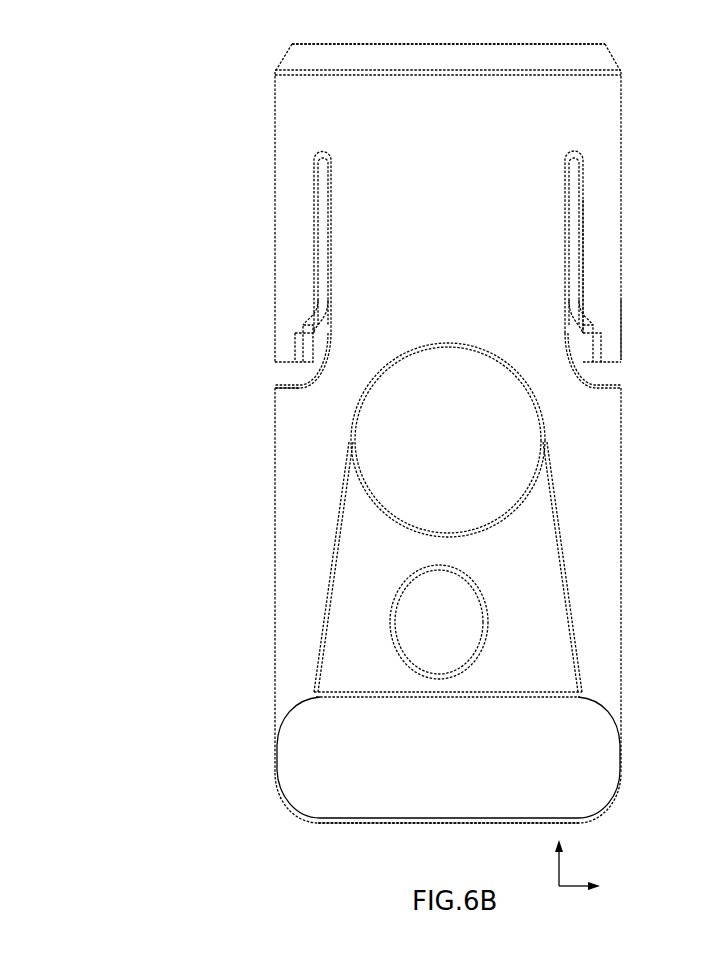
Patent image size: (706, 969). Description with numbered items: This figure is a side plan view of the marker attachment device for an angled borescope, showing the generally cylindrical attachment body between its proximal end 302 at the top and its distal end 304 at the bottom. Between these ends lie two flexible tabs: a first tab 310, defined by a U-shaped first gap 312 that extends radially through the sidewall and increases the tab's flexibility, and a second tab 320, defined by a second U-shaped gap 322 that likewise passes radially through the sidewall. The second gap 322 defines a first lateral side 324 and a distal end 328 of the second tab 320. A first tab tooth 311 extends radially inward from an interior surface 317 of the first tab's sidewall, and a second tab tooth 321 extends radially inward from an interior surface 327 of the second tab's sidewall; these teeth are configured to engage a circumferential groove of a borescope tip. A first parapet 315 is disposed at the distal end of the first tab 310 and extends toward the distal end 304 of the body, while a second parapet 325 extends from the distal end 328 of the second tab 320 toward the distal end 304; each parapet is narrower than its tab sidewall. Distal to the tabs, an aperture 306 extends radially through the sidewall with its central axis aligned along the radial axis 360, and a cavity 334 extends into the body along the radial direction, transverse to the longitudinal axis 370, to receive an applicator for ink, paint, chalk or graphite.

The proximal end 302 is at (365, 44).
The distal end 304 is at (388, 823).
The aperture 306 is at (525, 436).
The cavity 334 is at (470, 620).
The first tab 310 is at (310, 222).
The interior surface 317 is at (310, 262).
The first tab tooth 311 is at (317, 310).
The first parapet 315 is at (283, 343).
The U-shaped first gap 312 is at (268, 377).
The first lateral side 324 is at (605, 172).
The interior surface 327 is at (584, 203).
The second tab tooth 321 is at (583, 303).
The second tab 320 is at (613, 292).
The second parapet 325 is at (621, 315).
The distal end 328 is at (621, 348).
The second U-shaped gap 322 is at (613, 375).
The radial axis 360 is at (570, 882).
The longitudinal axis 370 is at (558, 870).